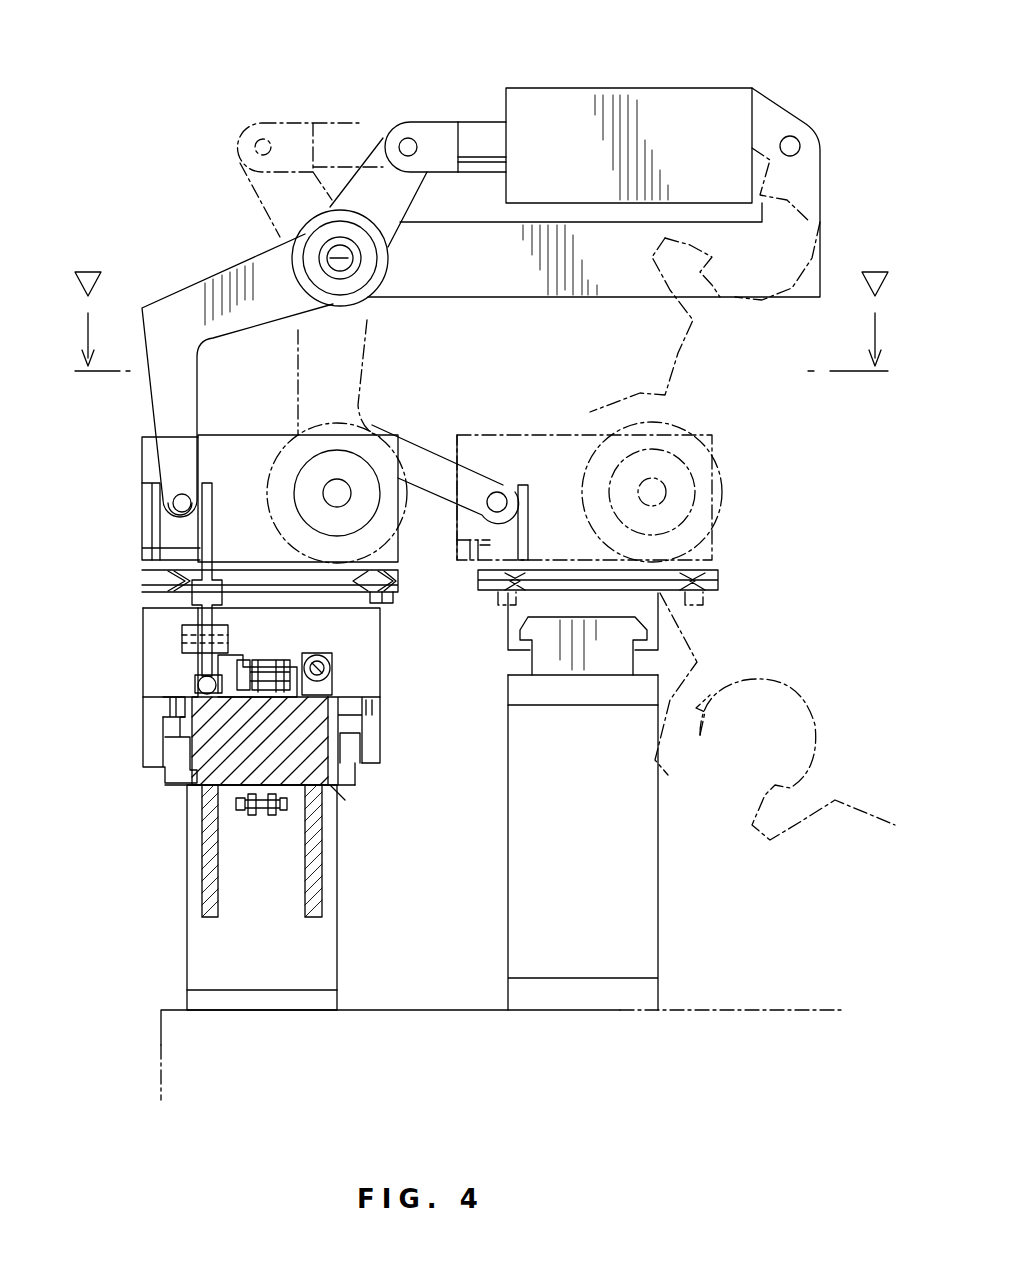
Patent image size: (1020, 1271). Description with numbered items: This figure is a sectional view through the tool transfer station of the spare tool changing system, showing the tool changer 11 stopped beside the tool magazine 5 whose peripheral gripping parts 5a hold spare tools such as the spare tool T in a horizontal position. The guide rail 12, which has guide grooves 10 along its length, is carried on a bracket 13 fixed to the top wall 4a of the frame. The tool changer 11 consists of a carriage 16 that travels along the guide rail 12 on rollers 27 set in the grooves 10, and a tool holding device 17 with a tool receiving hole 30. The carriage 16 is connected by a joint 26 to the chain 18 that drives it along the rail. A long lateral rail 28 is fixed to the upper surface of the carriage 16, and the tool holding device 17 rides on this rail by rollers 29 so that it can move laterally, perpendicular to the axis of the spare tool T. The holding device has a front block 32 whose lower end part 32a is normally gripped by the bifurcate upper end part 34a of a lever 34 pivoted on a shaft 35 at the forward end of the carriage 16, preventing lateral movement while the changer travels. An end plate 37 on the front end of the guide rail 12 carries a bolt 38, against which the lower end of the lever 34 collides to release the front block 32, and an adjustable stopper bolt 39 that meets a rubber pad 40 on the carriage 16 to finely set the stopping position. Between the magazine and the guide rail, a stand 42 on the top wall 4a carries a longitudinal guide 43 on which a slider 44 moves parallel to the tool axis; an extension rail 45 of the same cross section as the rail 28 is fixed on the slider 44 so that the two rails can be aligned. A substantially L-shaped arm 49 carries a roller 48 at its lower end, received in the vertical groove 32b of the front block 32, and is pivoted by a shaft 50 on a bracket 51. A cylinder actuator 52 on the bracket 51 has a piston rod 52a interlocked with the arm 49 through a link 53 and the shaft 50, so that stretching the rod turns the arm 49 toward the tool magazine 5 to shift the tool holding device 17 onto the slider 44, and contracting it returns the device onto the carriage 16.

The top wall 4a is at (428, 1010).
The tool magazine 5 is at (858, 165).
The gripping parts 5a is at (595, 430).
The guide grooves 10 is at (168, 765).
The tool changer 11 is at (395, 418).
The guide rail 12 is at (192, 800).
The bracket 13 is at (195, 945).
The carriage 16 is at (370, 635).
The tool holding device 17 is at (140, 437).
The chain 18 is at (262, 818).
The joint 26 is at (245, 662).
The rollers 27 is at (365, 755).
The rail 28 is at (165, 585).
The rollers 29 is at (400, 588).
The tool receiving hole 30 is at (300, 505).
The front block 32 is at (150, 488).
The lower end part 32a is at (200, 553).
The vertical groove 32b is at (172, 515).
The lever 34 is at (148, 655).
The bifurcate upper end part 34a is at (180, 625).
The shaft 35 is at (198, 685).
The end plate 37 is at (345, 790).
The bolt 38 is at (165, 725).
The stopper bolt 39 is at (350, 700).
The rubber pad 40 is at (330, 668).
The stand 42 is at (650, 935).
The guide 43 is at (596, 680).
The slider 44 is at (655, 610).
The extension rail 45 is at (545, 570).
The roller 48 is at (213, 500).
The arm 49 is at (160, 310).
The shaft 50 is at (335, 258).
The bracket 51 is at (545, 290).
The cylinder actuator 52 is at (650, 92).
The piston rod 52a is at (483, 132).
The link 53 is at (372, 175).
The spare tool T is at (268, 435).